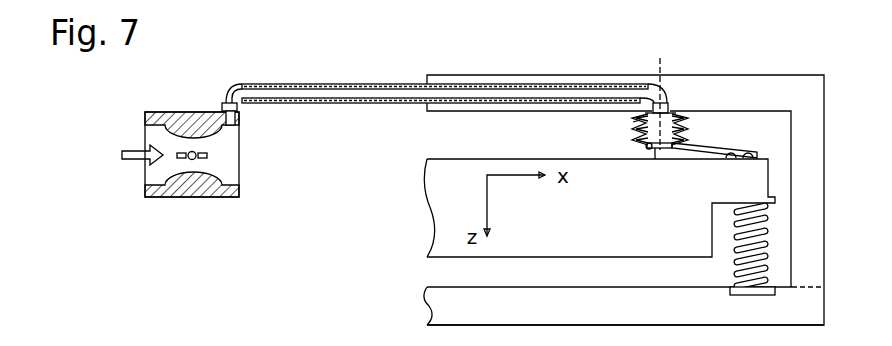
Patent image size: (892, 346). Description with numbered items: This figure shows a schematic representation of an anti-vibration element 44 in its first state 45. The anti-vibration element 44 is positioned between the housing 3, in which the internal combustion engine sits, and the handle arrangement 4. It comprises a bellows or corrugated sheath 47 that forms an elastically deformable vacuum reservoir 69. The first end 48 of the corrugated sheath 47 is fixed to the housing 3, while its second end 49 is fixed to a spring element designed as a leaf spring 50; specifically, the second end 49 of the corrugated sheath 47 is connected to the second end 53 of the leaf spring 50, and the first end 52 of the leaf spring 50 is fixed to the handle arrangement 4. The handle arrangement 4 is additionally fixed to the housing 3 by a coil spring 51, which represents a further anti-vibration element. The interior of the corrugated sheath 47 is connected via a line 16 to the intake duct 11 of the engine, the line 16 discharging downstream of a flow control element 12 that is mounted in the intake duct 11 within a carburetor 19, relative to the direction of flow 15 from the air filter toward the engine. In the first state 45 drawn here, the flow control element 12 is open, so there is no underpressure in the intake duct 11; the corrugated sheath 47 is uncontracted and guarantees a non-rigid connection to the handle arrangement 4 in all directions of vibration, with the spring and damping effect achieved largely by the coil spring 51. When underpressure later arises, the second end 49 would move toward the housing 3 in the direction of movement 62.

The housing 3 is at (452, 303).
The handle arrangement 4 is at (452, 214).
The intake duct 11 is at (229, 176).
The flow control element 12 is at (207, 155).
The direction of flow 15 is at (134, 160).
The line 16 is at (331, 95).
The carburetor 19 is at (205, 190).
The anti-vibration element 44 is at (741, 64).
The first state 45 is at (607, 141).
The corrugated sheath 47 is at (690, 123).
The first end 48 is at (672, 113).
The second end 49 is at (645, 150).
The leaf spring 50 is at (693, 150).
The coil spring 51 is at (733, 257).
The first end 52 is at (752, 152).
The second end 53 is at (657, 160).
The direction of movement 62 is at (656, 62).
The vacuum reservoir 69 is at (633, 122).